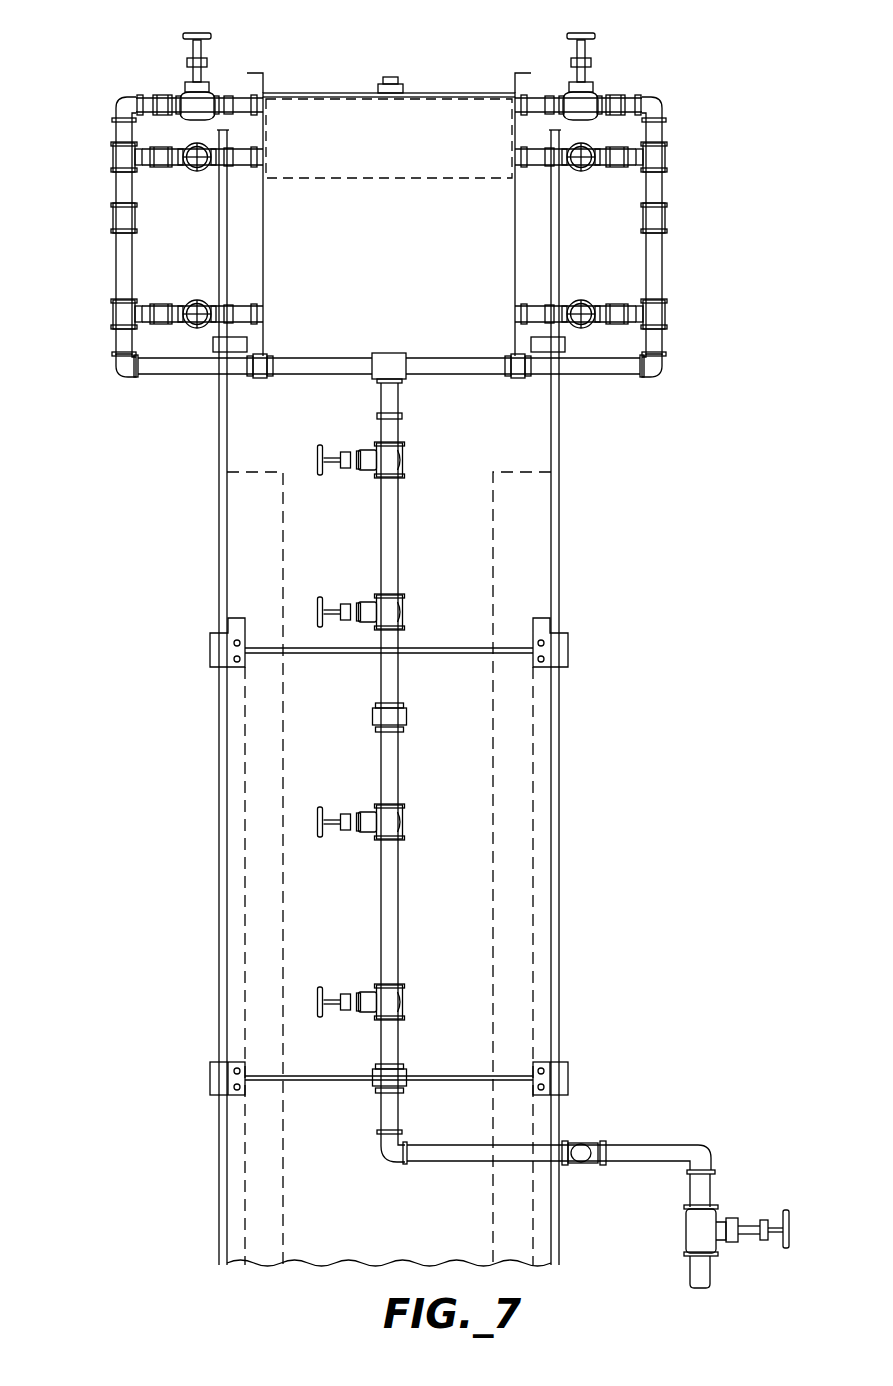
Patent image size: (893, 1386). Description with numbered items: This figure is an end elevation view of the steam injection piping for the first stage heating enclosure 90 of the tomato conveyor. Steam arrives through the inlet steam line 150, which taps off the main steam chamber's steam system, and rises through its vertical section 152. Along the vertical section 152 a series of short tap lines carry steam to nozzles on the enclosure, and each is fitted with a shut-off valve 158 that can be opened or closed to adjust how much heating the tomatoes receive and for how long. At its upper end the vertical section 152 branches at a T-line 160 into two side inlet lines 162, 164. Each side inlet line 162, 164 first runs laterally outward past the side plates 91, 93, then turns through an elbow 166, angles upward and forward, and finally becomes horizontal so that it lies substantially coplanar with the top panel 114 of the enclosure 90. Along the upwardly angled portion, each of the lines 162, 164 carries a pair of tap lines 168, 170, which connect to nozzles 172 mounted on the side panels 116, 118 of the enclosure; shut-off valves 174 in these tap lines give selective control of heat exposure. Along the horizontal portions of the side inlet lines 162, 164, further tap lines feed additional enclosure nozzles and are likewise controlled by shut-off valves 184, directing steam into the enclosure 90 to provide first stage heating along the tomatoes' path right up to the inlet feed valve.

The heating enclosure 90 is at (428, 94).
The top panel 114 is at (356, 92).
The side panel 116 is at (262, 258).
The side panel 118 is at (517, 258).
The side plate 91 is at (222, 542).
The side plate 93 is at (557, 542).
The inlet steam line 150 is at (641, 1142).
The vertical section 152 is at (406, 716).
The shut-off valve 158 is at (343, 450).
The T-line 160 is at (404, 363).
The side inlet line 162 is at (665, 328).
The side inlet line 164 is at (114, 318).
The elbow 166 is at (118, 372).
The tap line 168 is at (160, 300).
The tap line 170 is at (160, 170).
The nozzle 172 is at (250, 168).
The shut-off valve 174 is at (185, 118).
The shut-off valve 184 is at (197, 32).